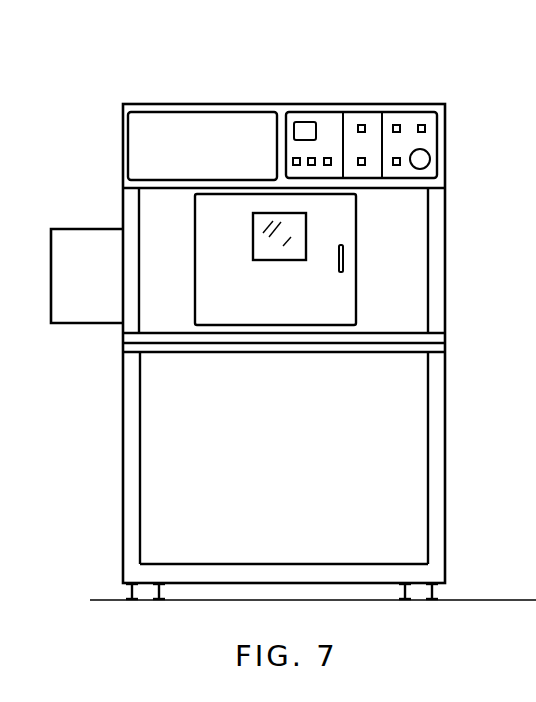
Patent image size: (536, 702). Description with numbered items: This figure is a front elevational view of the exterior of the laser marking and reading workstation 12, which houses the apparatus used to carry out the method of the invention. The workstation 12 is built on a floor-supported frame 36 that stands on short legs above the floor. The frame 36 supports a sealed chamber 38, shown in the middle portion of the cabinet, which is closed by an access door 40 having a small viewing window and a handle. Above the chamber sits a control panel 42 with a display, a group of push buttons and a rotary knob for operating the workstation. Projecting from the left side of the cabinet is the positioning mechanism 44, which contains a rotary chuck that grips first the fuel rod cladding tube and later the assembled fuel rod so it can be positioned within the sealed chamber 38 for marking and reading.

The laser marking and reading workstation 12 is at (433, 83).
The floor-supported frame 36 is at (445, 482).
The sealed chamber 38 is at (415, 233).
The access door 40 is at (348, 286).
The control panel 42 is at (430, 143).
The positioning mechanism 44 is at (95, 229).